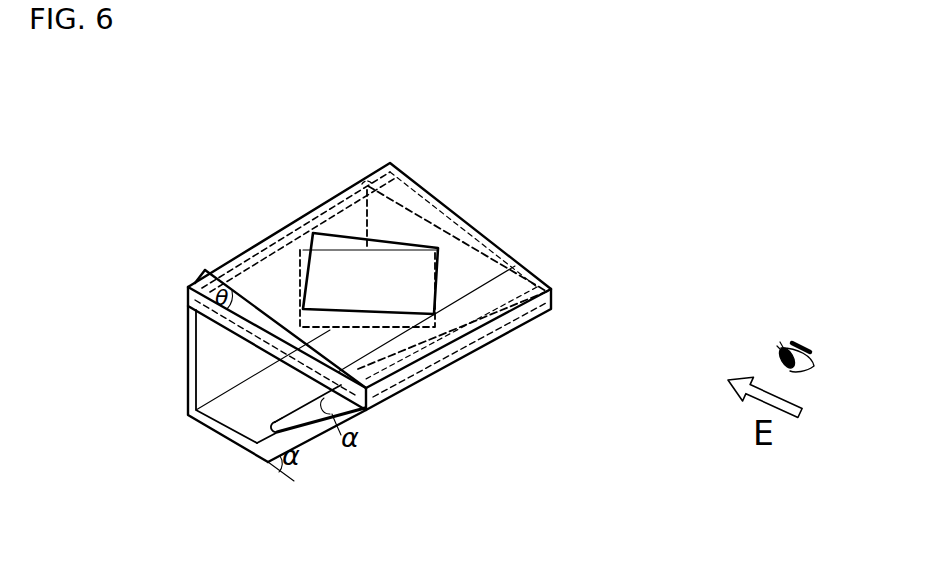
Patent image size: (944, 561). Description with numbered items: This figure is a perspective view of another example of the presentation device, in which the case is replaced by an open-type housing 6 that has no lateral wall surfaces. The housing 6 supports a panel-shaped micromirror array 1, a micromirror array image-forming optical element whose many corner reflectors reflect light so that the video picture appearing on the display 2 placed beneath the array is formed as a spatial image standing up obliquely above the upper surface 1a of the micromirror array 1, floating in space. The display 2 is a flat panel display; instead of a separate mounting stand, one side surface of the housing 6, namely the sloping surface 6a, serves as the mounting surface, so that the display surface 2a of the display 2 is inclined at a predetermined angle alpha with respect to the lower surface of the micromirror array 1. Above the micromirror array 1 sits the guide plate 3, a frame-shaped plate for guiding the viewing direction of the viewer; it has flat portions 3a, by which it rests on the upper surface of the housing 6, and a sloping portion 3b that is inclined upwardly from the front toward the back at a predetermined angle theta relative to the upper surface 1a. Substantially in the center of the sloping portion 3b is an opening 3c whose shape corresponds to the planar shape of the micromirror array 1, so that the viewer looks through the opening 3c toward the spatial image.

The micromirror array 1 is at (402, 266).
The upper surface 1a is at (421, 249).
The display 2 is at (274, 427).
The display surface 2a is at (316, 402).
The guide plate 3 is at (497, 241).
The flat portions 3a is at (516, 290).
The sloping portion 3b is at (395, 162).
The opening 3c is at (303, 283).
The housing 6 is at (185, 363).
The sloping surface 6a is at (311, 428).